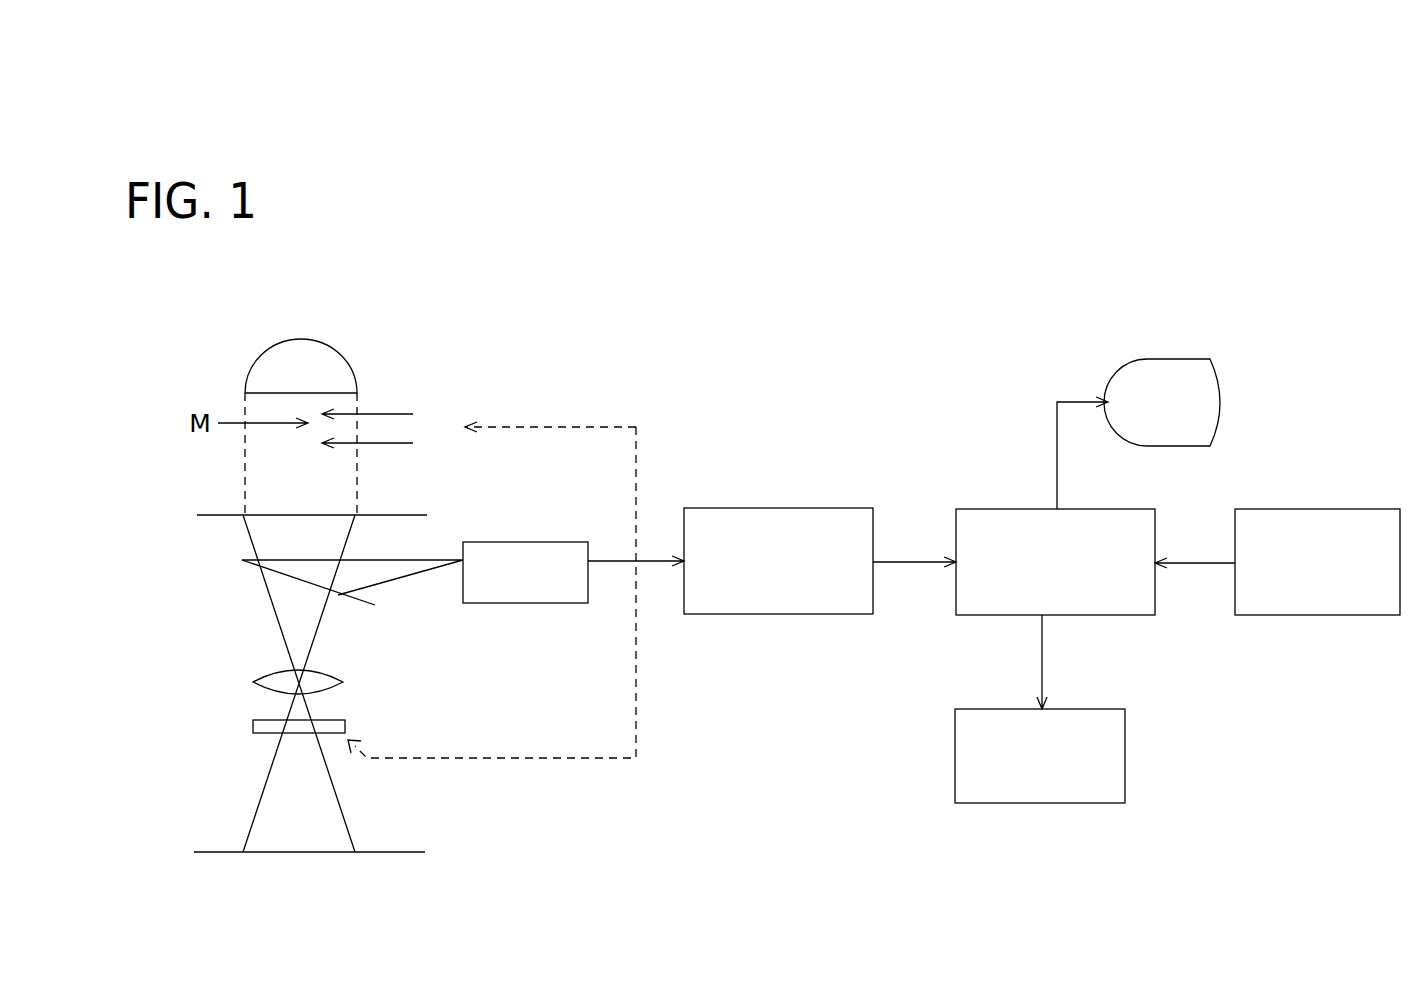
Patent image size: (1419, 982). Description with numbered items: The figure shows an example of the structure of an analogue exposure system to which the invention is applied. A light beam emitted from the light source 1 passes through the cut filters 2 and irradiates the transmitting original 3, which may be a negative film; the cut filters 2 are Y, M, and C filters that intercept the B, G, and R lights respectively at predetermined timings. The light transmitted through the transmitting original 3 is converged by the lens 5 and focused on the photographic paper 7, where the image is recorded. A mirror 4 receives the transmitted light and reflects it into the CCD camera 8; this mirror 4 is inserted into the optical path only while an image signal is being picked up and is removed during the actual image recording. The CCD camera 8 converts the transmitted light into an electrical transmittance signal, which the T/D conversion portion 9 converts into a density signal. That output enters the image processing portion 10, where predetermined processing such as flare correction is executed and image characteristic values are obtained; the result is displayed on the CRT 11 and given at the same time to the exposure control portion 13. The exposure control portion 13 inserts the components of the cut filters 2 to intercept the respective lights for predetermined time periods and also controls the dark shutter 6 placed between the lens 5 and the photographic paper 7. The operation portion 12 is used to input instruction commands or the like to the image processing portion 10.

The light source 1 is at (290, 340).
The cut filters 2 is at (385, 407).
The transmitting original 3 is at (395, 513).
The mirror 4 is at (368, 598).
The lens 5 is at (343, 682).
The dark shutter 6 is at (345, 713).
The photographic paper 7 is at (408, 852).
The CCD camera 8 is at (572, 542).
The T/D conversion portion 9 is at (838, 508).
The image processing portion 10 is at (1102, 509).
The CRT 11 is at (1185, 360).
The operation portion 12 is at (1297, 509).
The exposure control portion 13 is at (1078, 709).